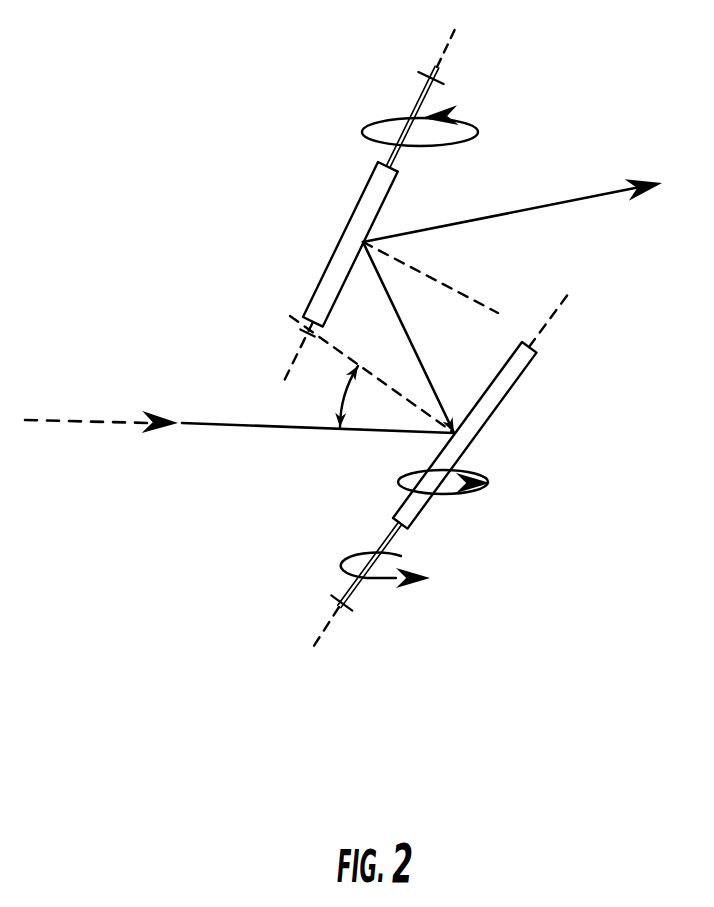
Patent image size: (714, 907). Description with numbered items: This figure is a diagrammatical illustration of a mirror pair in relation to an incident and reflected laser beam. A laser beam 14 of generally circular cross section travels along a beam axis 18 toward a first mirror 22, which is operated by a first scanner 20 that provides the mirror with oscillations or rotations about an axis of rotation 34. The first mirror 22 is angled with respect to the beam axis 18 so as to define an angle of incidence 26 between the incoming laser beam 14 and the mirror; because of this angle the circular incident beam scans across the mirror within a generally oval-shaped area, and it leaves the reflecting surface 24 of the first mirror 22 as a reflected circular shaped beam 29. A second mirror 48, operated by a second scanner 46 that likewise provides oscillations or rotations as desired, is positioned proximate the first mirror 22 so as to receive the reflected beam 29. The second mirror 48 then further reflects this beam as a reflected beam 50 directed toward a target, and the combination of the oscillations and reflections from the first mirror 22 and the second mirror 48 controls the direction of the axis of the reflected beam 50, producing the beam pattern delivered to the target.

The laser beam 14 is at (227, 428).
The beam axis 18 is at (80, 422).
The first scanner 20 is at (360, 592).
The first mirror 22 is at (484, 412).
The reflecting surface 24 is at (463, 487).
The angle of incidence 26 is at (334, 393).
The reflected circular shaped beam 29 is at (428, 377).
The axis of rotation 34 is at (318, 640).
The second scanner 46 is at (418, 100).
The second mirror 48 is at (340, 245).
The reflected beam 50 is at (560, 203).